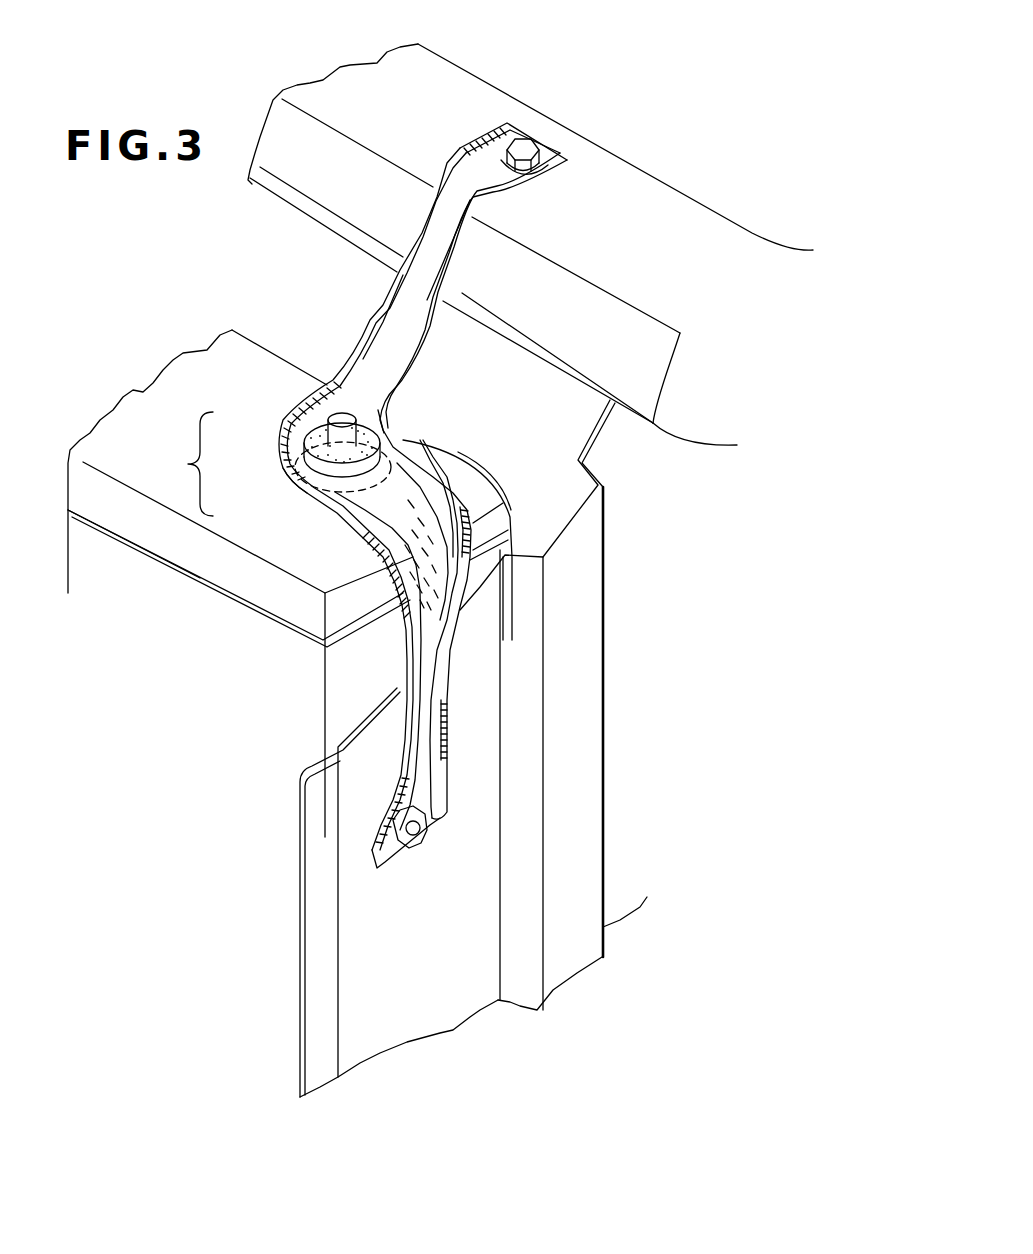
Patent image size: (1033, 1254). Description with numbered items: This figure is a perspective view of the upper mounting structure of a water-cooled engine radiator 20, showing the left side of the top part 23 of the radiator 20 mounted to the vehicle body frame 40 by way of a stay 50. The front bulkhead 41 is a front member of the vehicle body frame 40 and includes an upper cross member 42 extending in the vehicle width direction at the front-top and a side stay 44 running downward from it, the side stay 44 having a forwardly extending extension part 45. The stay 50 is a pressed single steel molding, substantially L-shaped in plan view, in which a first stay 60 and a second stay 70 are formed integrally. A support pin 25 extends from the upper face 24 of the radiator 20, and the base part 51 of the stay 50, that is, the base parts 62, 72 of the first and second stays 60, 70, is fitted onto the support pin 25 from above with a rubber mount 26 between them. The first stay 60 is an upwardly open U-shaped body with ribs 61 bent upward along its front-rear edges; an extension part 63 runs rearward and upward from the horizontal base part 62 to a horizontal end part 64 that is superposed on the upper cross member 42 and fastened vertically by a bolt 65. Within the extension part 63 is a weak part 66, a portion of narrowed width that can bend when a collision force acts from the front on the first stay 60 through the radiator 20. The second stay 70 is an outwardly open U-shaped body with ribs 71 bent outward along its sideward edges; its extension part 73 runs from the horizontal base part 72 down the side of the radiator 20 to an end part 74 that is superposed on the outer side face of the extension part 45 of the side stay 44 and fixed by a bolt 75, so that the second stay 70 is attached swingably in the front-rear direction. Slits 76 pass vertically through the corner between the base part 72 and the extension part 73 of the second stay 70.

The radiator 20 is at (102, 418).
The top part 23 is at (282, 541).
The upper face 24 is at (156, 394).
The support pin 25 is at (382, 406).
The rubber mount 26 is at (382, 447).
The vehicle body frame 40 is at (719, 150).
The front bulkhead 41 is at (722, 210).
The upper cross member 42 is at (752, 243).
The side stay 44 is at (645, 875).
The extension part 45 is at (435, 1017).
The stay 50 is at (755, 477).
The base part 51 is at (188, 464).
The first stay 60 is at (432, 346).
The rib 61 is at (483, 187).
The base part 62 is at (278, 430).
The extension part 63 is at (457, 274).
The end part 64 is at (498, 147).
The bolt 65 is at (528, 144).
The weak part 66 is at (413, 300).
The second stay 70 is at (490, 507).
The rib 71 is at (418, 752).
The base part 72 is at (357, 513).
The extension part 73 is at (420, 657).
The end part 74 is at (413, 788).
The bolt 75 is at (413, 853).
The slit 76 is at (300, 640).